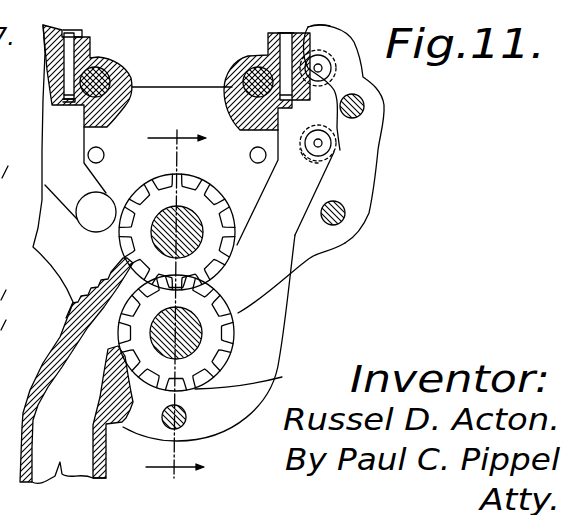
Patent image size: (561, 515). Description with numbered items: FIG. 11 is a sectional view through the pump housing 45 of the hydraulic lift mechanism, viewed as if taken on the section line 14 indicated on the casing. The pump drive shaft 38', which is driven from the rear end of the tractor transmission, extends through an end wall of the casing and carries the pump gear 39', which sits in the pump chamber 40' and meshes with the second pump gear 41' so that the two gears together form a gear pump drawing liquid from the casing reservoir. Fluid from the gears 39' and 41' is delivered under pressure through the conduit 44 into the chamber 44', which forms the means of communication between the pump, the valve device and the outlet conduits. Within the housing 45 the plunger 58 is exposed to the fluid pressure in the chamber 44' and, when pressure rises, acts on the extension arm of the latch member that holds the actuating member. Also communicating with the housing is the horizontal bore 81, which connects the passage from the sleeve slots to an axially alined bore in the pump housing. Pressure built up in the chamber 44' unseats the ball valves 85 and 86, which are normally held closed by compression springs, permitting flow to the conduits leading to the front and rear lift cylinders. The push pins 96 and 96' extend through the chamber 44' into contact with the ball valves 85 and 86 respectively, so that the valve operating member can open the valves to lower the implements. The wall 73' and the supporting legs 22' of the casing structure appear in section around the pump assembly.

The section line 14 is at (180, 306).
The supporting legs 22' is at (82, 426).
The pump drive shaft 38' is at (76, 370).
The pump gear 39' is at (228, 333).
The pump chamber 40' is at (259, 380).
The pump gear 41' is at (232, 235).
The conduit 44 is at (291, 282).
The chamber 44' is at (355, 193).
The pump housing 45 is at (377, 158).
The plunger 58 is at (68, 42).
The housing wall 73' is at (147, 233).
The horizontal bore 81 is at (104, 158).
The ball valve 85 is at (346, 52).
The ball valve 86 is at (311, 161).
The push pin 96 is at (353, 68).
The push pin 96' is at (361, 139).